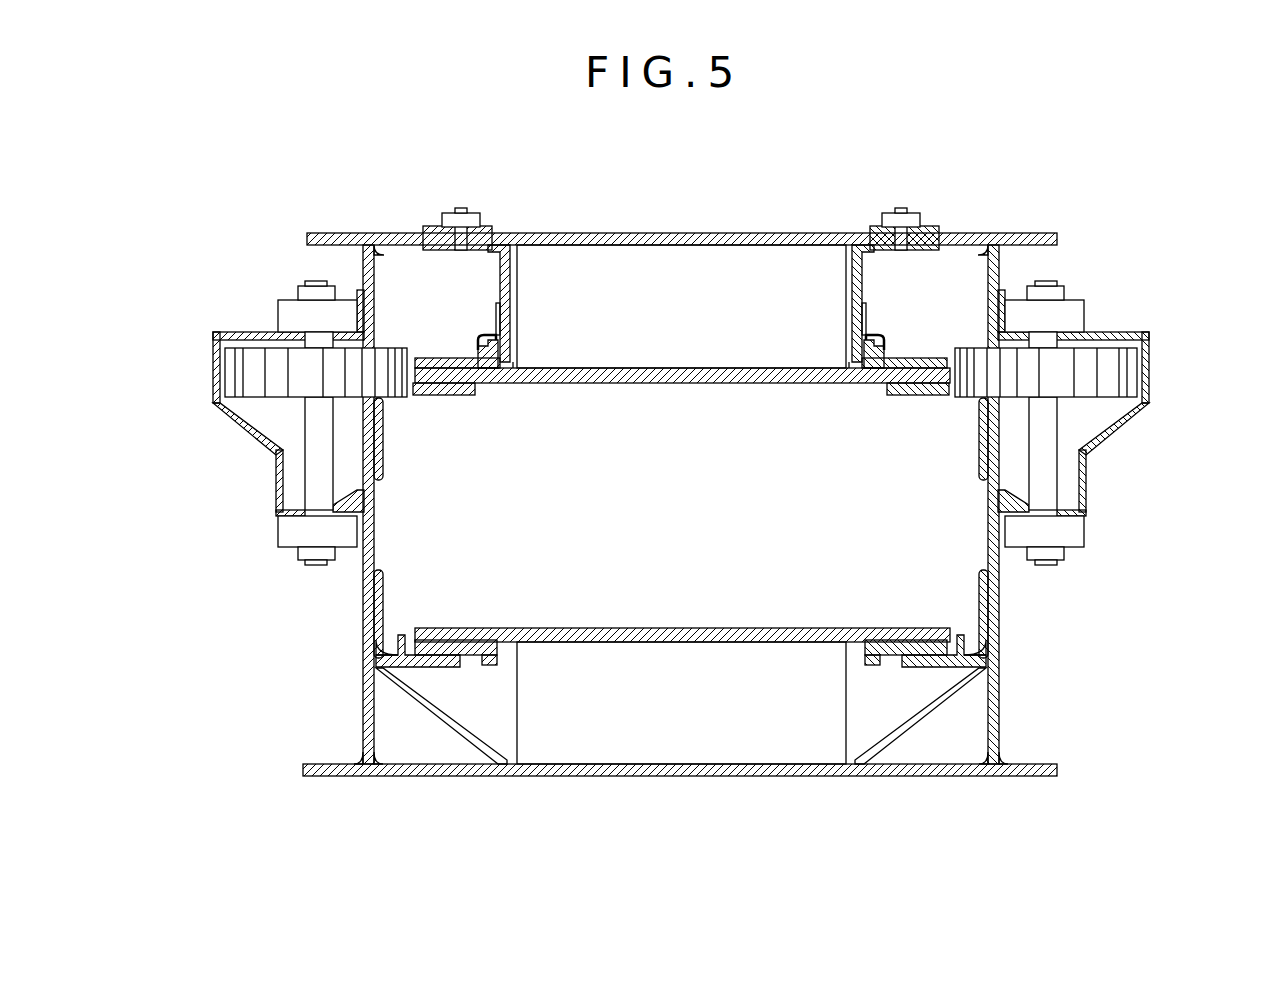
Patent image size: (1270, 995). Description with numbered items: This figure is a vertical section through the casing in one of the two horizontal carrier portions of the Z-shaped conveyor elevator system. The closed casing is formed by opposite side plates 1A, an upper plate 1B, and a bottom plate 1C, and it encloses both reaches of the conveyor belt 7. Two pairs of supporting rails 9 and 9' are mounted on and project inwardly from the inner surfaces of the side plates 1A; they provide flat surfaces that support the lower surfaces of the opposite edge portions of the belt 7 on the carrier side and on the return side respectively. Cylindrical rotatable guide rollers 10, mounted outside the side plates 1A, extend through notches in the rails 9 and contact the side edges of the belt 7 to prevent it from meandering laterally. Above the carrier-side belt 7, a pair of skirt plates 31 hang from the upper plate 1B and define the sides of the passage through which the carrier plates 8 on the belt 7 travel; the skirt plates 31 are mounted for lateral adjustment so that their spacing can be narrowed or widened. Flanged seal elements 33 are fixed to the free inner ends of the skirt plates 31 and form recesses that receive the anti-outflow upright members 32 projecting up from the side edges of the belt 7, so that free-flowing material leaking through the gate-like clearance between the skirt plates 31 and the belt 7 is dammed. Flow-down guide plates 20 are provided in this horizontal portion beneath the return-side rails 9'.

The side plate 1A is at (365, 607).
The upper plate 1B is at (593, 233).
The bottom plate of casing 1C is at (615, 778).
The belt 7 is at (660, 368).
The carrier plate 8 is at (770, 270).
The supporting rail 9 is at (681, 406).
The supporting rail 9' is at (681, 679).
The guide roller 10 is at (235, 360).
The flow-down guide plate 20 is at (437, 728).
The skirt plate 31 is at (498, 270).
The anti-outflow upright member 32 is at (500, 345).
The flanged seal element 33 is at (487, 337).